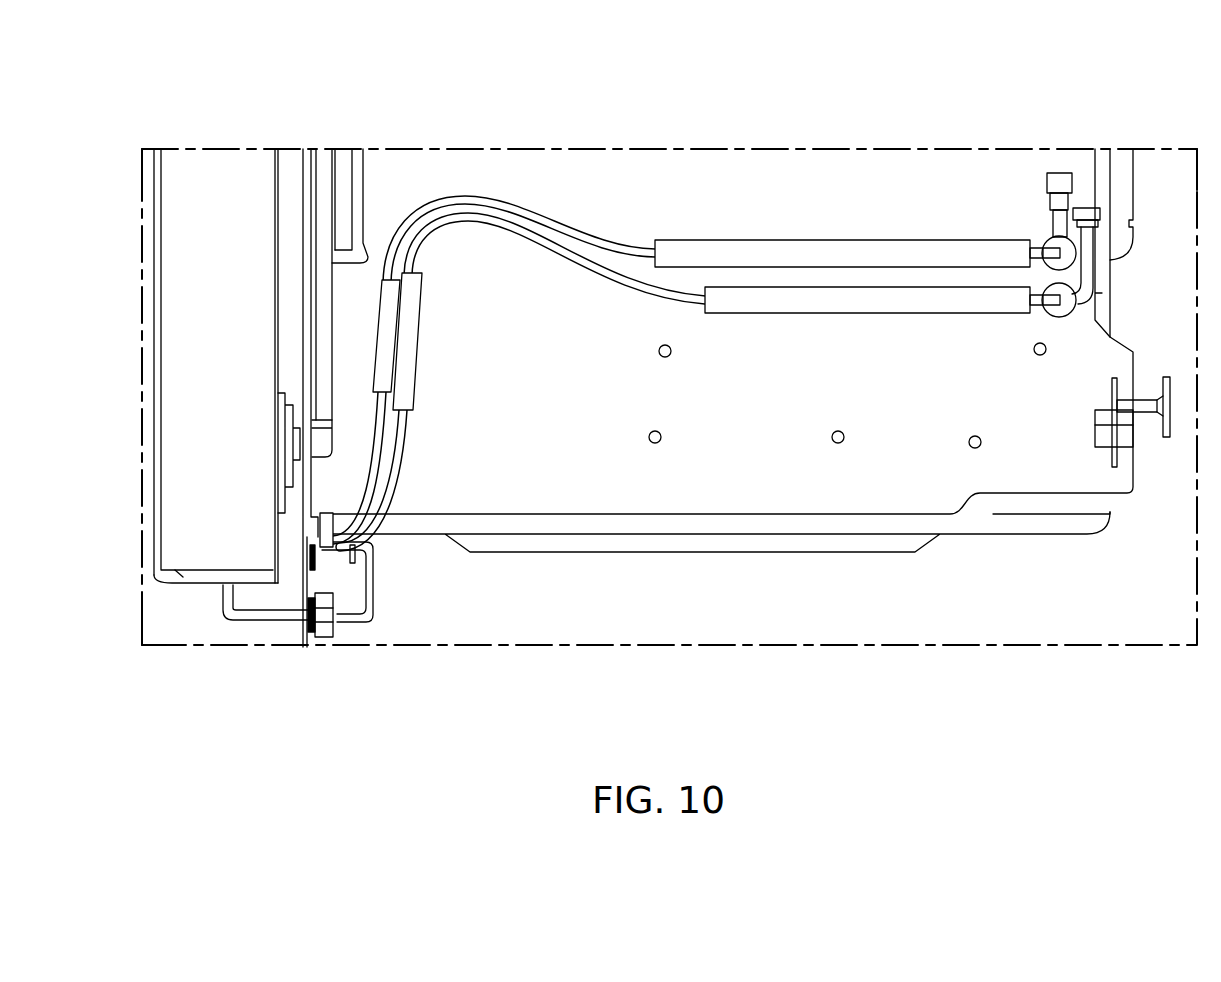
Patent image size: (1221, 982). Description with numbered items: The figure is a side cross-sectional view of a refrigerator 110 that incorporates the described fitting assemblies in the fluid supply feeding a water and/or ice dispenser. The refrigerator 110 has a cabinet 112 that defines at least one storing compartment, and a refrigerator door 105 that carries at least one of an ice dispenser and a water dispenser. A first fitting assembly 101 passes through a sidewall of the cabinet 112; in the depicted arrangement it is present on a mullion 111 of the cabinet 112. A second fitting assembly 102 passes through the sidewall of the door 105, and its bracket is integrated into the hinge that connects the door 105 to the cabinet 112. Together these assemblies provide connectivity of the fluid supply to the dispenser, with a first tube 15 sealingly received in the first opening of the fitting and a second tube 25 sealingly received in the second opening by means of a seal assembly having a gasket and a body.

The first tube 15 is at (578, 228).
The second tube 25 is at (258, 622).
The first fitting assembly 101 is at (322, 640).
The second fitting assembly 102 is at (192, 586).
The refrigerator door 105 is at (183, 331).
The refrigerator 110 is at (1051, 88).
The mullion 111 is at (334, 567).
The cabinet 112 is at (852, 628).